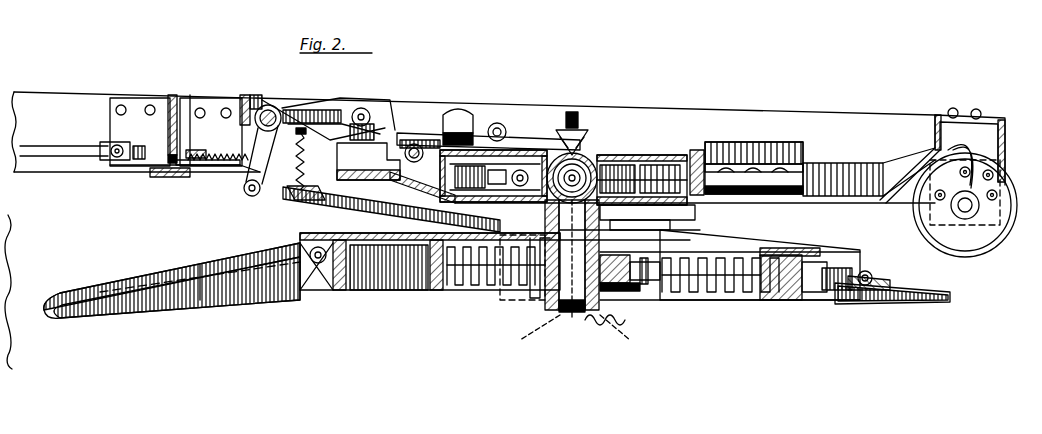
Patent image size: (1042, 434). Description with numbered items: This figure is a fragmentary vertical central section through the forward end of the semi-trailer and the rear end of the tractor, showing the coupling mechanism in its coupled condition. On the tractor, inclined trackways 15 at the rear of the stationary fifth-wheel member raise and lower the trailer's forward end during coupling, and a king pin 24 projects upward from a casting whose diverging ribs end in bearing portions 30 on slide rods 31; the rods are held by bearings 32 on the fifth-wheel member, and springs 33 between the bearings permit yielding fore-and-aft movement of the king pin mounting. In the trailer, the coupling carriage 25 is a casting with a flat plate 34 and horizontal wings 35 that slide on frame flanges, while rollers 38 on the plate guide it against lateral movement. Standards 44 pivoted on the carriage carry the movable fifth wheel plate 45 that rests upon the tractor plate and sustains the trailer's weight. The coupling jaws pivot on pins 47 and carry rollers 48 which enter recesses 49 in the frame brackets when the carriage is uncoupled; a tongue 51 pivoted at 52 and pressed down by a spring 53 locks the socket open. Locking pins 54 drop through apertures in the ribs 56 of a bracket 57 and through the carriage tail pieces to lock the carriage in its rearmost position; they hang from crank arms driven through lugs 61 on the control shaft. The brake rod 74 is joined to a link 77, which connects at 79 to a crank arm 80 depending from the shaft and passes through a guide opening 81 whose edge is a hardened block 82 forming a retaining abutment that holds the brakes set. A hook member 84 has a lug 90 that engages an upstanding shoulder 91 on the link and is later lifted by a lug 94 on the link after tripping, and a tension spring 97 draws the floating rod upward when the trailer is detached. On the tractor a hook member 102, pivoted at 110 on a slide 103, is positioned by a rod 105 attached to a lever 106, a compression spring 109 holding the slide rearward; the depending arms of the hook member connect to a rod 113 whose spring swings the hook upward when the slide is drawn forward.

The inclined trackways 15 is at (186, 262).
The king pin 24 is at (610, 230).
The coupling carriage 25 is at (605, 141).
The bearing portions 30 is at (670, 300).
The slide rods 31 is at (676, 284).
The bearings 32 is at (772, 300).
The springs 33 is at (712, 292).
The flat plate 34 is at (502, 286).
The horizontal wing 35 is at (376, 206).
The rollers 38 is at (728, 143).
The upstanding standards 44 is at (670, 230).
The movable fifth wheel plate 45 is at (662, 247).
The pins 47 is at (482, 121).
The rollers 48 is at (677, 154).
The recesses 49 is at (830, 164).
The tongue 51 is at (566, 126).
The pivot 52 is at (540, 122).
The spring 53 is at (268, 94).
The locking pins 54 is at (372, 107).
The horizontal ribs 56 is at (414, 102).
The bracket 57 is at (324, 108).
The lugs 61 is at (282, 110).
The brake rod 74 is at (73, 151).
The link 77 is at (222, 166).
The pivot connection 79 is at (248, 175).
The crank arm 80 is at (246, 194).
The guide opening 81 is at (167, 150).
The hardened metal block 82 is at (180, 177).
The hook member 84 is at (244, 96).
The lug 90 is at (194, 101).
The upstanding shoulder 91 is at (140, 172).
The upstanding lug 94 is at (185, 175).
The tension spring 97 is at (288, 159).
The hook member 102 is at (468, 290).
The slide 103 is at (636, 287).
The rod 105 is at (848, 266).
The lever 106 is at (892, 286).
The compression spring 109 is at (806, 256).
The pivot 110 is at (522, 306).
The rod 113 is at (623, 318).